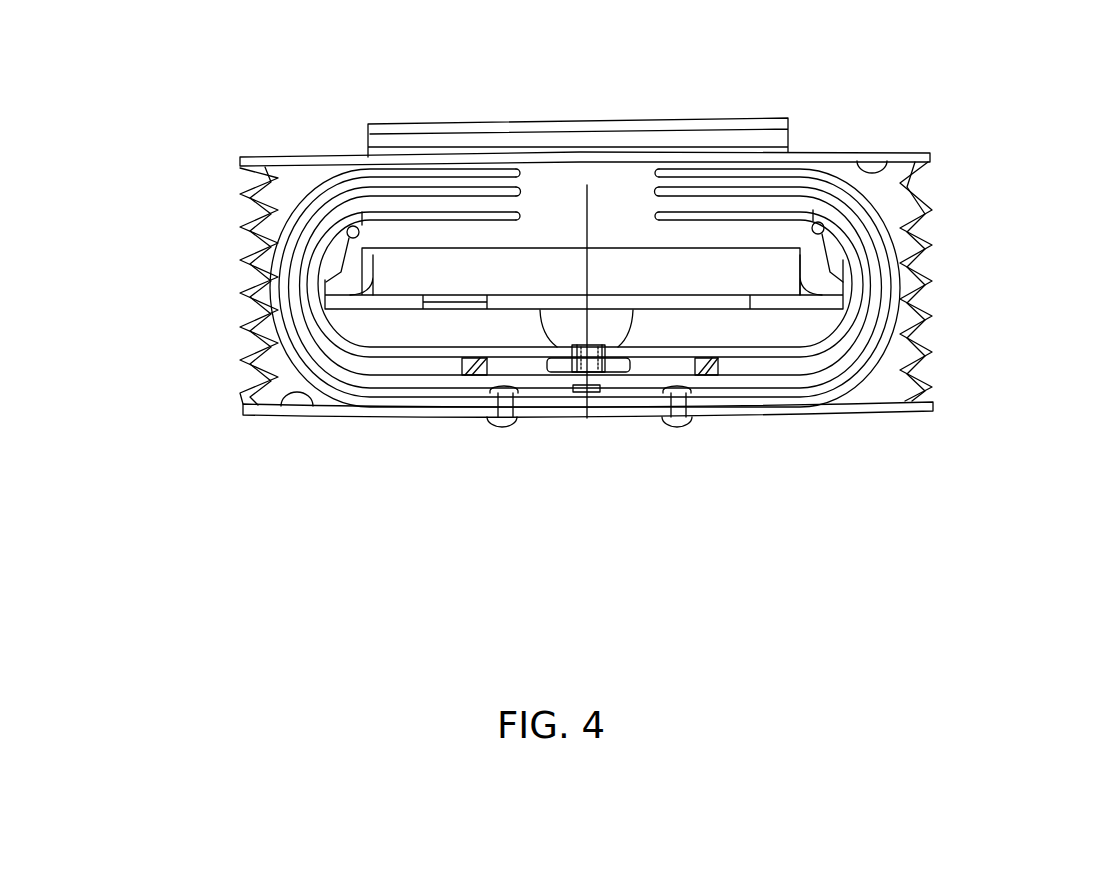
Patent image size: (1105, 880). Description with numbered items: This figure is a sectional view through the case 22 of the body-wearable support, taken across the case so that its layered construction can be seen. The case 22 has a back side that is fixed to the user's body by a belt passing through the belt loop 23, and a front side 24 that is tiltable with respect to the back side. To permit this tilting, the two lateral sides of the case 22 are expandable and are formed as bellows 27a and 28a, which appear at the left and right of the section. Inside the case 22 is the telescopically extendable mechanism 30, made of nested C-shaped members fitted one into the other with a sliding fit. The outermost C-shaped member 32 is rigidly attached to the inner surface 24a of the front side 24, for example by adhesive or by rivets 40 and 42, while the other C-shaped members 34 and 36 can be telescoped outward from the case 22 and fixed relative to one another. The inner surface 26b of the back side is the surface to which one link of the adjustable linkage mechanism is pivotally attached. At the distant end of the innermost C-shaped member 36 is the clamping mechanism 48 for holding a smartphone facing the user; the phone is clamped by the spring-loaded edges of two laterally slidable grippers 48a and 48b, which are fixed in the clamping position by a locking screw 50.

The case 22 is at (584, 418).
The belt loop 23 is at (605, 121).
The front side 24 is at (552, 416).
The inner surface of the front side 24a is at (281, 406).
The inner surface of the back side 26b is at (886, 159).
The bellows 27a is at (247, 332).
The bellows 28a is at (920, 288).
The telescopically extendable mechanism 30 is at (387, 350).
The outermost C-shaped member 32 is at (850, 383).
The C-shaped member 34 is at (788, 378).
The innermost C-shaped member 36 is at (738, 348).
The rivet 40 is at (503, 427).
The rivet 42 is at (677, 427).
The clamping mechanism 48 is at (806, 311).
The gripper 48a is at (835, 238).
The gripper 48b is at (343, 237).
The locking screw 50 is at (615, 363).